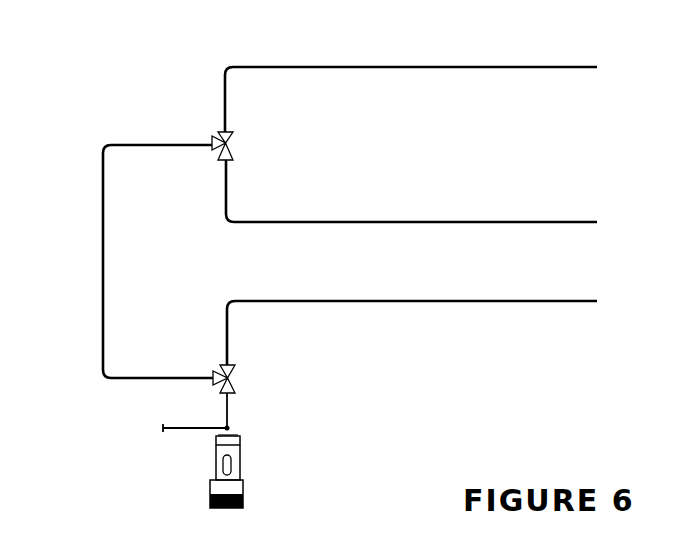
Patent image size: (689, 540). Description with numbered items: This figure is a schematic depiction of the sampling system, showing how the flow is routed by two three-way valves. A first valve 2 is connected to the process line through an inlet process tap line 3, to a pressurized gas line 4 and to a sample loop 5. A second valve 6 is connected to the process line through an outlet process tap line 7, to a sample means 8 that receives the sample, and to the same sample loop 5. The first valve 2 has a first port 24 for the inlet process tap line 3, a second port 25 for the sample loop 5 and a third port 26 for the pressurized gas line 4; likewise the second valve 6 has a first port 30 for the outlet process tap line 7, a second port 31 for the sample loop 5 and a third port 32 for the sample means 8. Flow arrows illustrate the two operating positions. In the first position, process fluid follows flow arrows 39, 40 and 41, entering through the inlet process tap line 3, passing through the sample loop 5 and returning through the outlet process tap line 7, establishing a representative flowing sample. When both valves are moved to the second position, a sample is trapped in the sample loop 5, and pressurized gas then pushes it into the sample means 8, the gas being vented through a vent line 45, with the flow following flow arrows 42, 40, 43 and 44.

The first valve 2 is at (240, 142).
The inlet process tap line 3 is at (350, 67).
The pressurized gas line 4 is at (351, 222).
The sample loop 5 is at (105, 257).
The second valve 6 is at (242, 378).
The outlet process tap line 7 is at (350, 301).
The sample means 8 is at (200, 498).
The first port 24 is at (233, 133).
The second port 25 is at (214, 134).
The third port 26 is at (230, 161).
The first port 30 is at (237, 366).
The second port 31 is at (216, 369).
The third port 32 is at (232, 394).
The flow arrow 39 is at (490, 45).
The flow arrow 40 is at (81, 227).
The flow arrow 41 is at (483, 325).
The flow arrow 42 is at (490, 200).
The flow arrow 43 is at (265, 442).
The flow arrow 44 is at (197, 452).
The vent line 45 is at (190, 427).